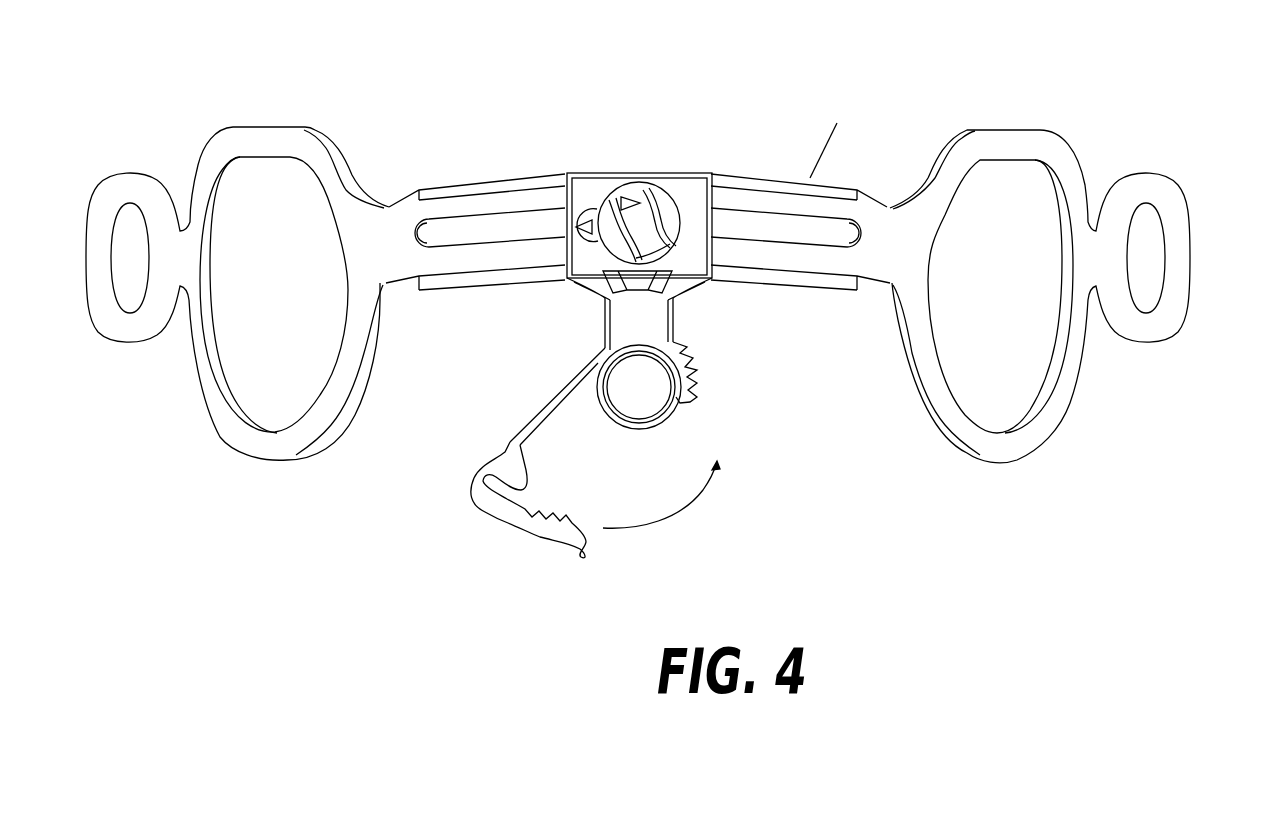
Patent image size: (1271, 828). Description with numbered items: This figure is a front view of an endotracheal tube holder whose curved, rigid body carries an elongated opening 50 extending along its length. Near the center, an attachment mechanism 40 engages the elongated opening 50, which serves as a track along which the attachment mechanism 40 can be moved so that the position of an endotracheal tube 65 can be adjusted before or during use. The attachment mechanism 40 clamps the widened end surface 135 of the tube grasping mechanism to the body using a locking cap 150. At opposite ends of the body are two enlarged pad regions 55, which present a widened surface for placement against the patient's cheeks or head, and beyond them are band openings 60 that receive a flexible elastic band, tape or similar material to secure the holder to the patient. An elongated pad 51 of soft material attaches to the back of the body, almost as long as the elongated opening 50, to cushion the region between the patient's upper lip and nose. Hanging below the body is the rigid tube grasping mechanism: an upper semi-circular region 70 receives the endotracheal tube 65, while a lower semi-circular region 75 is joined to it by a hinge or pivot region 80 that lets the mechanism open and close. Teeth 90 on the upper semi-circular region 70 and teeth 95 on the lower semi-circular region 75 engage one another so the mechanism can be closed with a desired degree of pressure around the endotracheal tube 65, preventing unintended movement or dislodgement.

The attachment mechanism 40 is at (694, 160).
The elongated opening 50 is at (480, 232).
The elongated pad 51 is at (882, 108).
The enlarged pad regions 55 is at (232, 440).
The band openings 60 is at (123, 283).
The endotracheal tube 65 is at (637, 430).
The upper semi-circular region 70 is at (595, 350).
The lower semi-circular region 75 is at (505, 462).
The hinge or pivot region 80 is at (570, 392).
The teeth 90 is at (550, 527).
The teeth 95 is at (707, 378).
The widened end surface 135 is at (578, 191).
The locking cap 150 is at (662, 208).